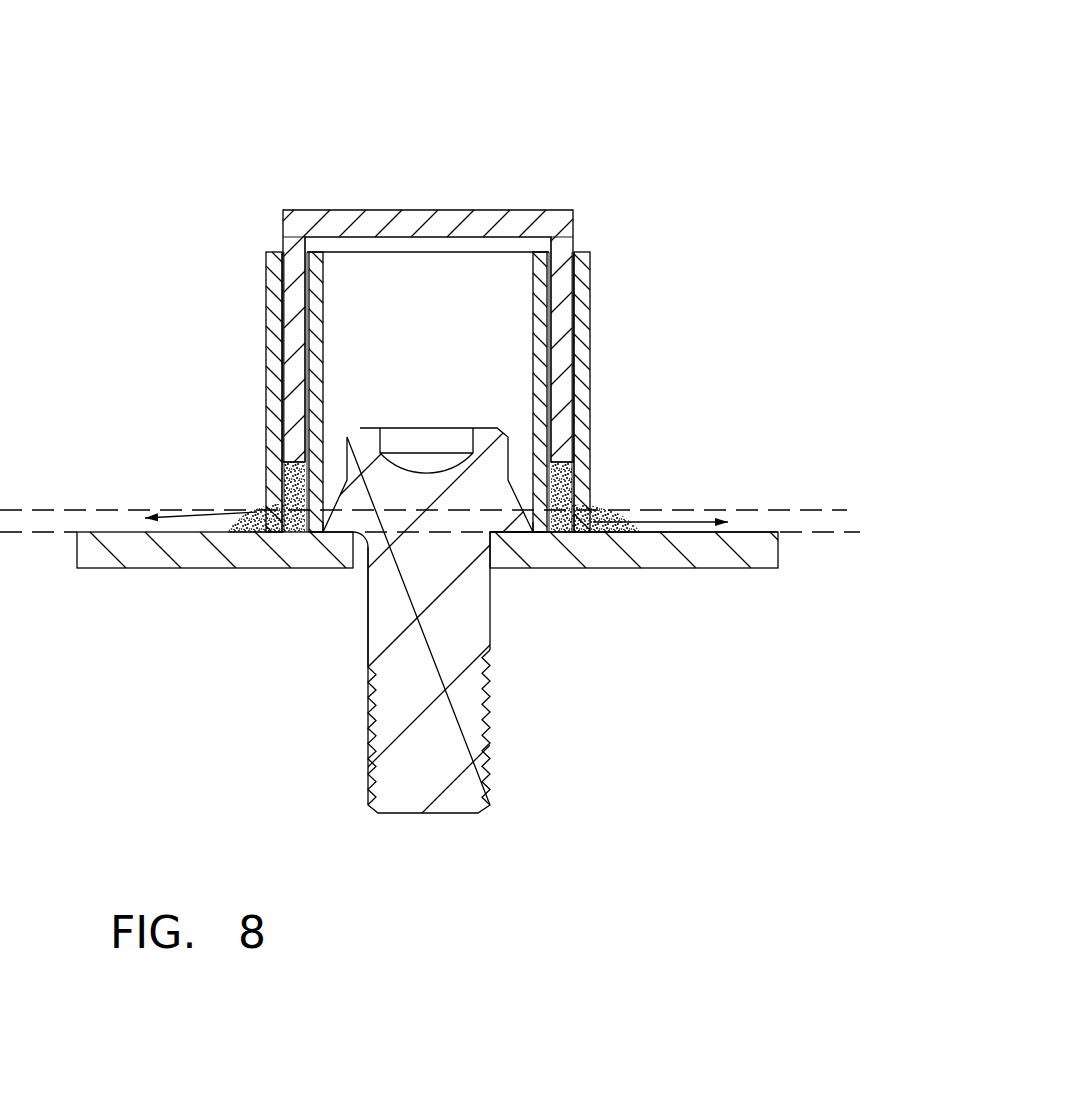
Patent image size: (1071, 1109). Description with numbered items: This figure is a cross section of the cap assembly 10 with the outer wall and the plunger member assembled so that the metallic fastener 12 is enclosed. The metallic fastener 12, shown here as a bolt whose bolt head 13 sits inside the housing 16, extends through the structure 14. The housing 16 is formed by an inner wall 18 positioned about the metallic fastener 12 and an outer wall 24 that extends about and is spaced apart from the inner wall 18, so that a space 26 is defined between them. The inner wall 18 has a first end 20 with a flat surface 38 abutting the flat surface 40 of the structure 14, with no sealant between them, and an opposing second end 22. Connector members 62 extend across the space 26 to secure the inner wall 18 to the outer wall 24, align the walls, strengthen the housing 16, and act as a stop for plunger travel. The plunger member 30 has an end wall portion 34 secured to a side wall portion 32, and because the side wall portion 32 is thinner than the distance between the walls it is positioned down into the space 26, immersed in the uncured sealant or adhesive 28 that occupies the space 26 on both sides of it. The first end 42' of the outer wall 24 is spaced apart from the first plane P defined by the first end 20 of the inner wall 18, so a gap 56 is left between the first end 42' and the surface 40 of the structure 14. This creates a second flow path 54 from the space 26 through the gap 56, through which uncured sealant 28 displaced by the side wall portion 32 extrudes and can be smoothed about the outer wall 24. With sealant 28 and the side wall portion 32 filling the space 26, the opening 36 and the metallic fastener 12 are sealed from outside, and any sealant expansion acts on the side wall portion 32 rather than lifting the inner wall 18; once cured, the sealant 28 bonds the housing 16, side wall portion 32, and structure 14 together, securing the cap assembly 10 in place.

The cap assembly 10 is at (655, 68).
The metallic fastener 12 is at (430, 605).
The bolt head 13 is at (380, 487).
The structure 14 is at (455, 524).
The housing 16 is at (438, 435).
The inner wall 18 is at (324, 358).
The first end 20 is at (313, 535).
The second end 22 is at (284, 216).
The outer wall 24 is at (275, 358).
The space 26 is at (277, 298).
The uncured sealant or adhesive 28 is at (282, 392).
The plunger member 30 is at (413, 337).
The side wall portion 32 is at (297, 332).
The end wall portion 34 is at (415, 212).
The opening 36 is at (343, 310).
The flat surface 38 is at (320, 535).
The surface 40 is at (747, 533).
The first end 42' is at (434, 496).
The second flow path 54 is at (172, 517).
The gap 56 is at (273, 537).
The connector member 62 is at (290, 465).
The first plane P is at (24, 538).